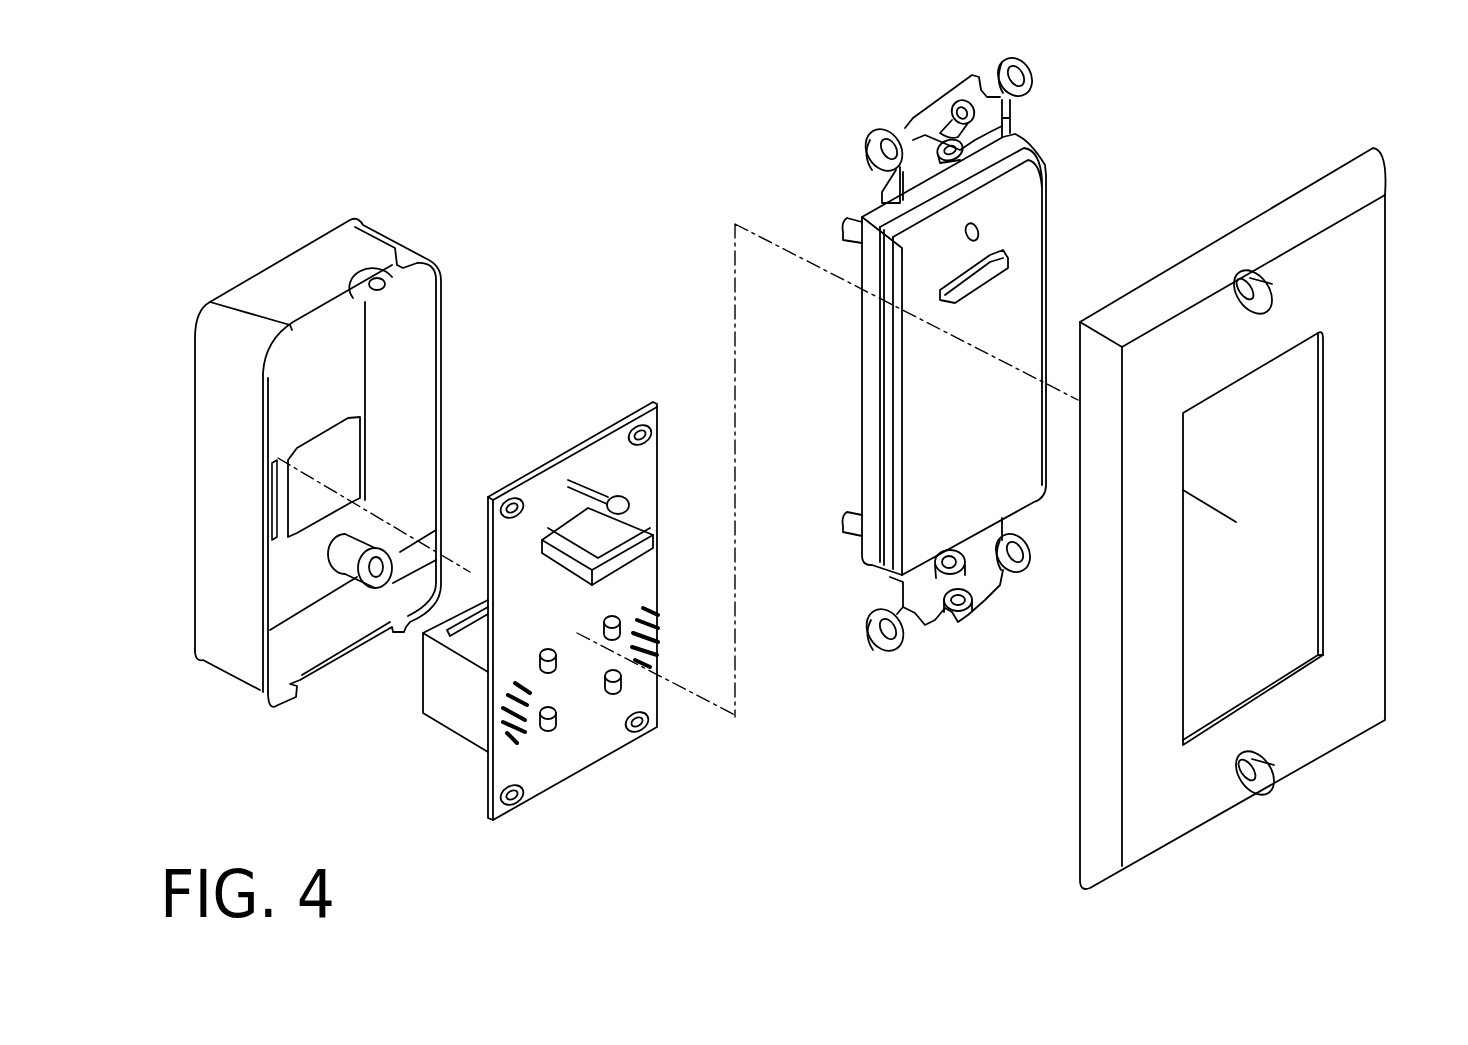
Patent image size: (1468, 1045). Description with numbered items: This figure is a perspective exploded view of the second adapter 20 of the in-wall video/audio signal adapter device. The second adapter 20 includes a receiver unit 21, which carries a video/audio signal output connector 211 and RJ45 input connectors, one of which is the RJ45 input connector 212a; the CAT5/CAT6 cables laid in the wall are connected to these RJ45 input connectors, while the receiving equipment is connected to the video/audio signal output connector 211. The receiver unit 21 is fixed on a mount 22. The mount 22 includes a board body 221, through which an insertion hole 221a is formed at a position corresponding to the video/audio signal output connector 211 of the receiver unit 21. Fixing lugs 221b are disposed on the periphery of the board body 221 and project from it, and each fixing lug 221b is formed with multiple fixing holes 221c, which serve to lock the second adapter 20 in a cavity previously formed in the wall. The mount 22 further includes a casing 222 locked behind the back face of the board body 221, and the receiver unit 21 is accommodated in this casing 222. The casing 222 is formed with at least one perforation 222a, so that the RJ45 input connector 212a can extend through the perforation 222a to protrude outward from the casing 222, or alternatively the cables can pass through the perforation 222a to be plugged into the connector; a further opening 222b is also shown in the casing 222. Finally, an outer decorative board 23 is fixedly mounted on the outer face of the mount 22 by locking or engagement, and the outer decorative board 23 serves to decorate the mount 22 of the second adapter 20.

The second adapter 20 is at (1178, 910).
The receiver unit 21 is at (582, 447).
The video/audio signal output connector 211 is at (632, 540).
The RJ45 input connector 212a is at (432, 690).
The mount 22 is at (775, 63).
The board body 221 is at (864, 149).
The insertion hole 221a is at (1007, 270).
The fixing lug 221b is at (987, 113).
The fixing hole 221c is at (917, 140).
The casing 222 is at (403, 244).
The perforation 222a is at (275, 532).
The rear opening 222b is at (337, 455).
The outer decorative board 23 is at (1355, 242).